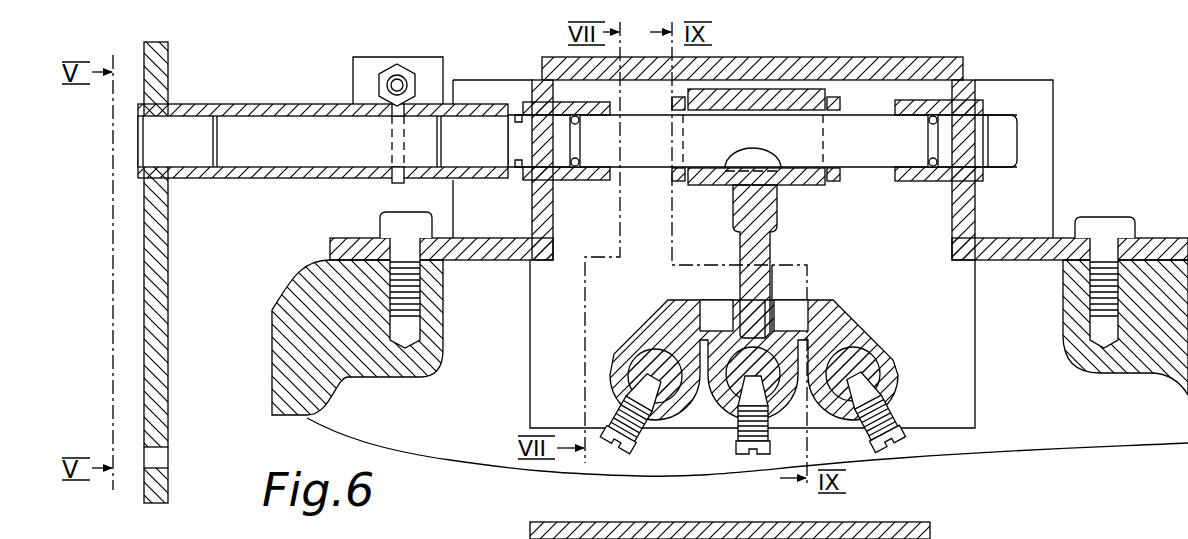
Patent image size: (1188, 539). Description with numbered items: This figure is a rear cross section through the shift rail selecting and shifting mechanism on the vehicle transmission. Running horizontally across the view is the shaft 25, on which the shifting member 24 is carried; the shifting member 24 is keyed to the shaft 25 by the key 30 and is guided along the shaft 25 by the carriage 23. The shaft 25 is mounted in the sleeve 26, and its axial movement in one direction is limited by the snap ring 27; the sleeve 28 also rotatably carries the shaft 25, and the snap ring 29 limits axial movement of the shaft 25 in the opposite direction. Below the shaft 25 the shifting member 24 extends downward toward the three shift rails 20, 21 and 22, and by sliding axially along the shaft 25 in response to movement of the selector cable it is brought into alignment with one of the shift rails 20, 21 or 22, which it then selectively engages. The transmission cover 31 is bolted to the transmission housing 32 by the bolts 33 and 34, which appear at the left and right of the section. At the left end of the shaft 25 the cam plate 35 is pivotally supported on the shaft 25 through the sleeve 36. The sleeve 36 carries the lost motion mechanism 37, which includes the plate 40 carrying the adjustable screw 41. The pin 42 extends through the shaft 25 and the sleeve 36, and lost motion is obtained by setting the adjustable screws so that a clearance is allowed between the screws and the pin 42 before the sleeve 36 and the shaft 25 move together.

The shift rail 20 is at (898, 362).
The shift rail 21 is at (745, 386).
The shift rail 22 is at (640, 344).
The carriage 23 is at (836, 182).
The shifting member 24 is at (810, 192).
The shaft 25 is at (655, 160).
The sleeve 26 is at (932, 181).
The snap ring 27 is at (986, 110).
The sleeve 28 is at (576, 182).
The snap ring 29 is at (522, 174).
The key 30 is at (765, 162).
The transmission cover 31 is at (964, 64).
The transmission housing 32 is at (276, 306).
The bolt 33 is at (443, 297).
The bolt 34 is at (1090, 292).
The cam plate 35 is at (168, 384).
The sleeve 36 is at (250, 104).
The lost motion mechanism 37 is at (445, 58).
The plate 40 is at (353, 66).
The adjustable screw 41 is at (386, 85).
The pin 42 is at (405, 92).